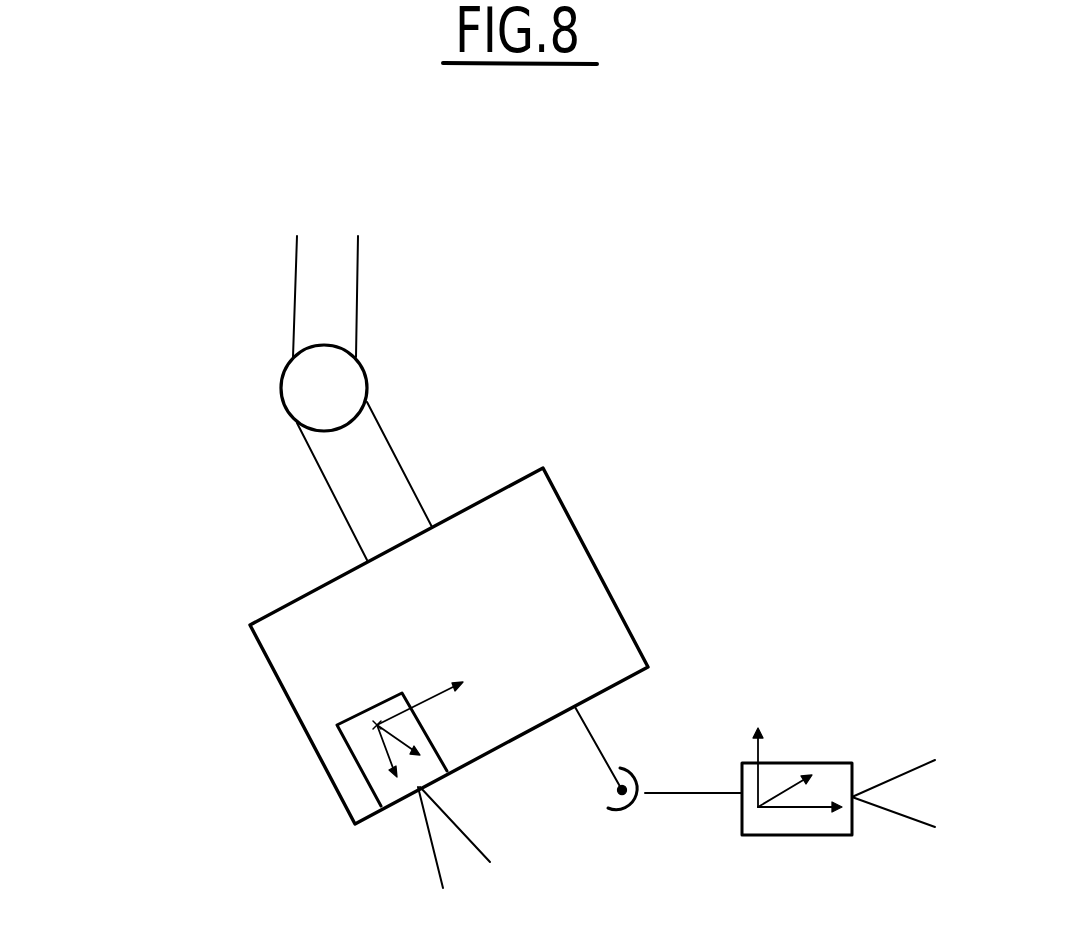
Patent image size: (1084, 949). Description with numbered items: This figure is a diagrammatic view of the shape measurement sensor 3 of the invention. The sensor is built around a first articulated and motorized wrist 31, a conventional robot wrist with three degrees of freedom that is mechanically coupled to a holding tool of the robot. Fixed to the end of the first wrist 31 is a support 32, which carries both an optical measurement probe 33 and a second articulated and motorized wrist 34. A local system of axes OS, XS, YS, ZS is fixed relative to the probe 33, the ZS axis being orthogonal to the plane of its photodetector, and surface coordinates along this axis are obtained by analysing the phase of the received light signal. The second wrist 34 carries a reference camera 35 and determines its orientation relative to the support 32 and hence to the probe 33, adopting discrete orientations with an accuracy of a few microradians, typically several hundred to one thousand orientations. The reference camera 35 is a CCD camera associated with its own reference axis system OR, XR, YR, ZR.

The shape measurement sensor 3 is at (148, 342).
The first articulated and motorized wrist 31 is at (318, 476).
The support 32 is at (259, 656).
The optical measurement probe 33 is at (365, 780).
The second articulated and motorized wrist 34 is at (690, 793).
The reference camera 35 is at (810, 836).